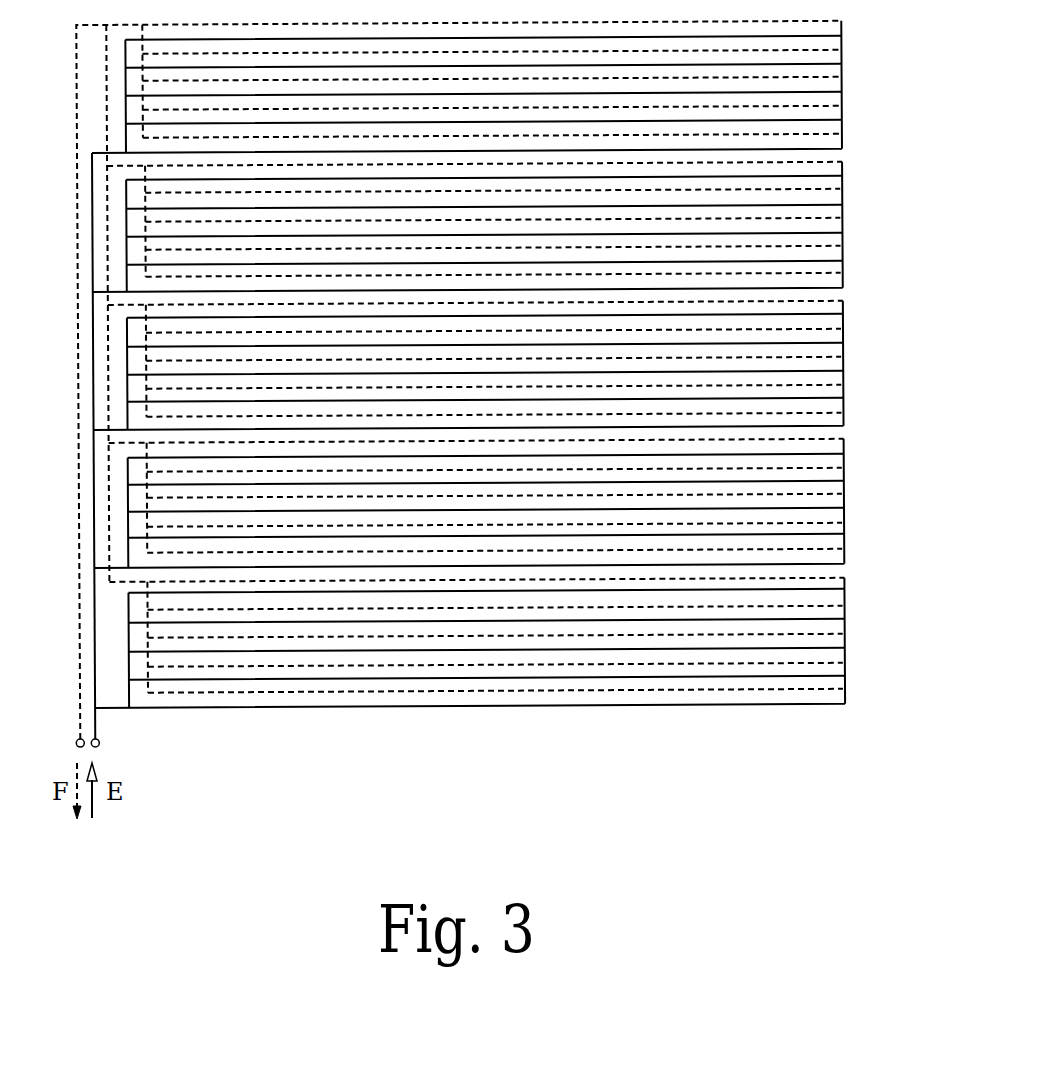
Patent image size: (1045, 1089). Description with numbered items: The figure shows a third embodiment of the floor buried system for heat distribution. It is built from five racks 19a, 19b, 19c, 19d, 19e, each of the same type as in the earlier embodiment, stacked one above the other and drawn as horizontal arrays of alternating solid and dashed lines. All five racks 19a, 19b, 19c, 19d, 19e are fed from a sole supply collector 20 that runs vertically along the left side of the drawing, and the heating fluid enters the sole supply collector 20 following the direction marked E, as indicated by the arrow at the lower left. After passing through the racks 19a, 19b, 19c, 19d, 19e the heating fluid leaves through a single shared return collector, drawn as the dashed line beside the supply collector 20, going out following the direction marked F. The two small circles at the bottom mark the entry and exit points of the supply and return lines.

The sole supply collector 20 is at (93, 497).
The rack 19a is at (845, 93).
The rack 19b is at (845, 232).
The rack 19c is at (847, 366).
The rack 19d is at (847, 504).
The rack 19e is at (848, 637).